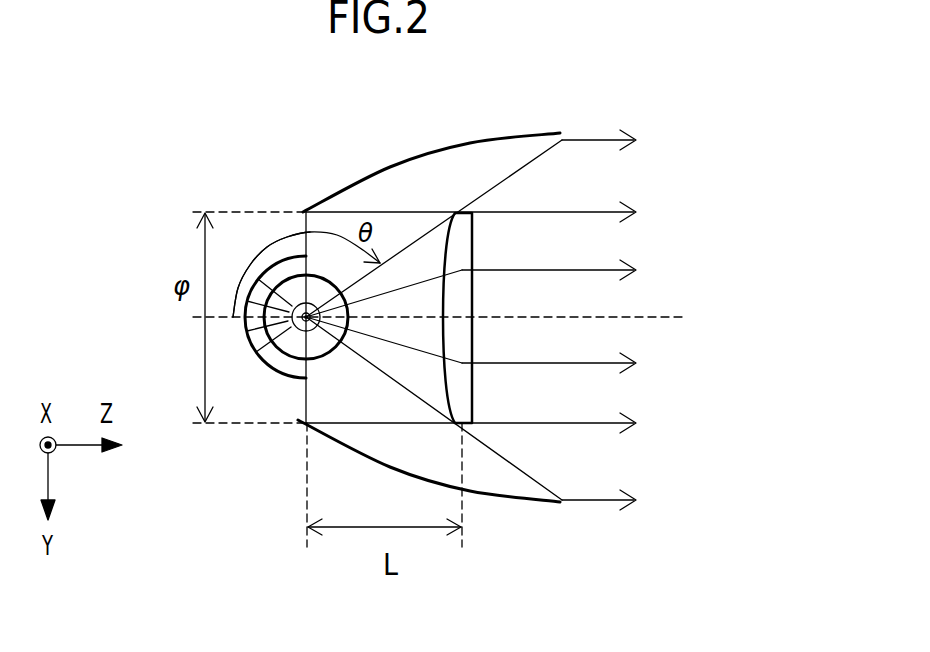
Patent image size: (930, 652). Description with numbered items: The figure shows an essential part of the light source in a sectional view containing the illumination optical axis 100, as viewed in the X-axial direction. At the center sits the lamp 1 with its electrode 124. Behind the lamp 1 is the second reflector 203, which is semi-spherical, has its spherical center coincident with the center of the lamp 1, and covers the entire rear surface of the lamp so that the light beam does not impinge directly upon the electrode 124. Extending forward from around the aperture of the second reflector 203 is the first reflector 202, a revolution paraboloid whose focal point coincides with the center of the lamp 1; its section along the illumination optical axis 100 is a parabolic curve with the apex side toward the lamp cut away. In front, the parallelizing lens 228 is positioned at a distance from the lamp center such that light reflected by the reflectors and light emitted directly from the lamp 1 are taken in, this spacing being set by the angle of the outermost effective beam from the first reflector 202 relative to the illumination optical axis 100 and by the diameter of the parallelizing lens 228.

The lamp 1 is at (330, 360).
The illumination optical axis 100 is at (657, 320).
The electrode 124 is at (253, 282).
The first reflector 202 is at (337, 183).
The second reflector 203 is at (283, 380).
The parallelizing lens 228 is at (449, 228).